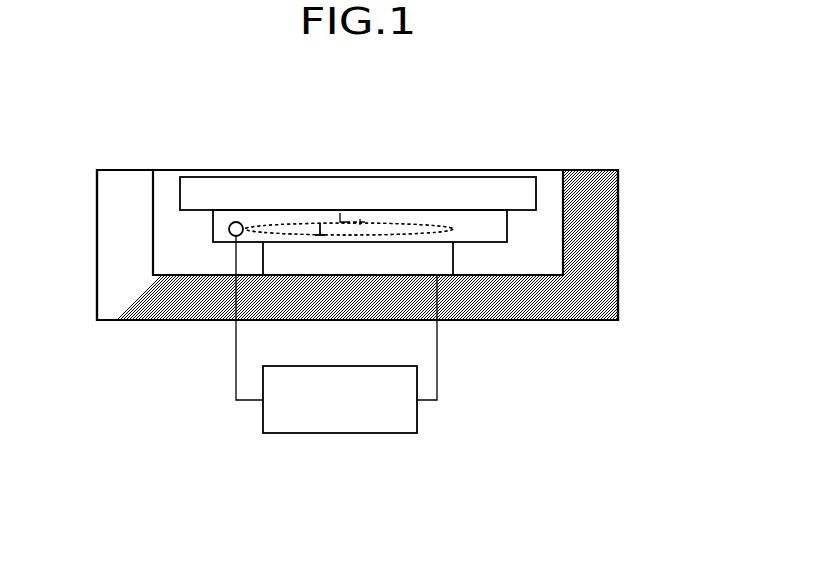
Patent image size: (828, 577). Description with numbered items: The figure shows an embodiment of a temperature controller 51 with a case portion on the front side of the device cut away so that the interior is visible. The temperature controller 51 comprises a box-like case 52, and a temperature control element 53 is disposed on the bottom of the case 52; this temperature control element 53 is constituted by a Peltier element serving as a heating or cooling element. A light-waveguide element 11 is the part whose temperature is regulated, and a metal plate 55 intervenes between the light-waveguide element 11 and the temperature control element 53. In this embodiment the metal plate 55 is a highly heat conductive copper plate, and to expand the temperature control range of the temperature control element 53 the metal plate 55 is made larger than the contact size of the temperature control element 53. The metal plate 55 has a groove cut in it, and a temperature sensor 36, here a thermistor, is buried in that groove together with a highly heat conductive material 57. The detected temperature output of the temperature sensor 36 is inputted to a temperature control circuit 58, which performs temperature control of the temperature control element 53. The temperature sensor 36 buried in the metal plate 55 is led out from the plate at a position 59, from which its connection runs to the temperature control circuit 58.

The light-waveguide element 11 is at (458, 186).
The temperature sensor 36 is at (320, 217).
The temperature controller 51 is at (595, 138).
The box-like case 52 is at (606, 226).
The temperature control element 53 is at (440, 268).
The metal plate 55 is at (488, 237).
The highly heat conductive material 57 is at (320, 217).
The temperature control circuit 58 is at (338, 433).
The position 59 is at (238, 220).